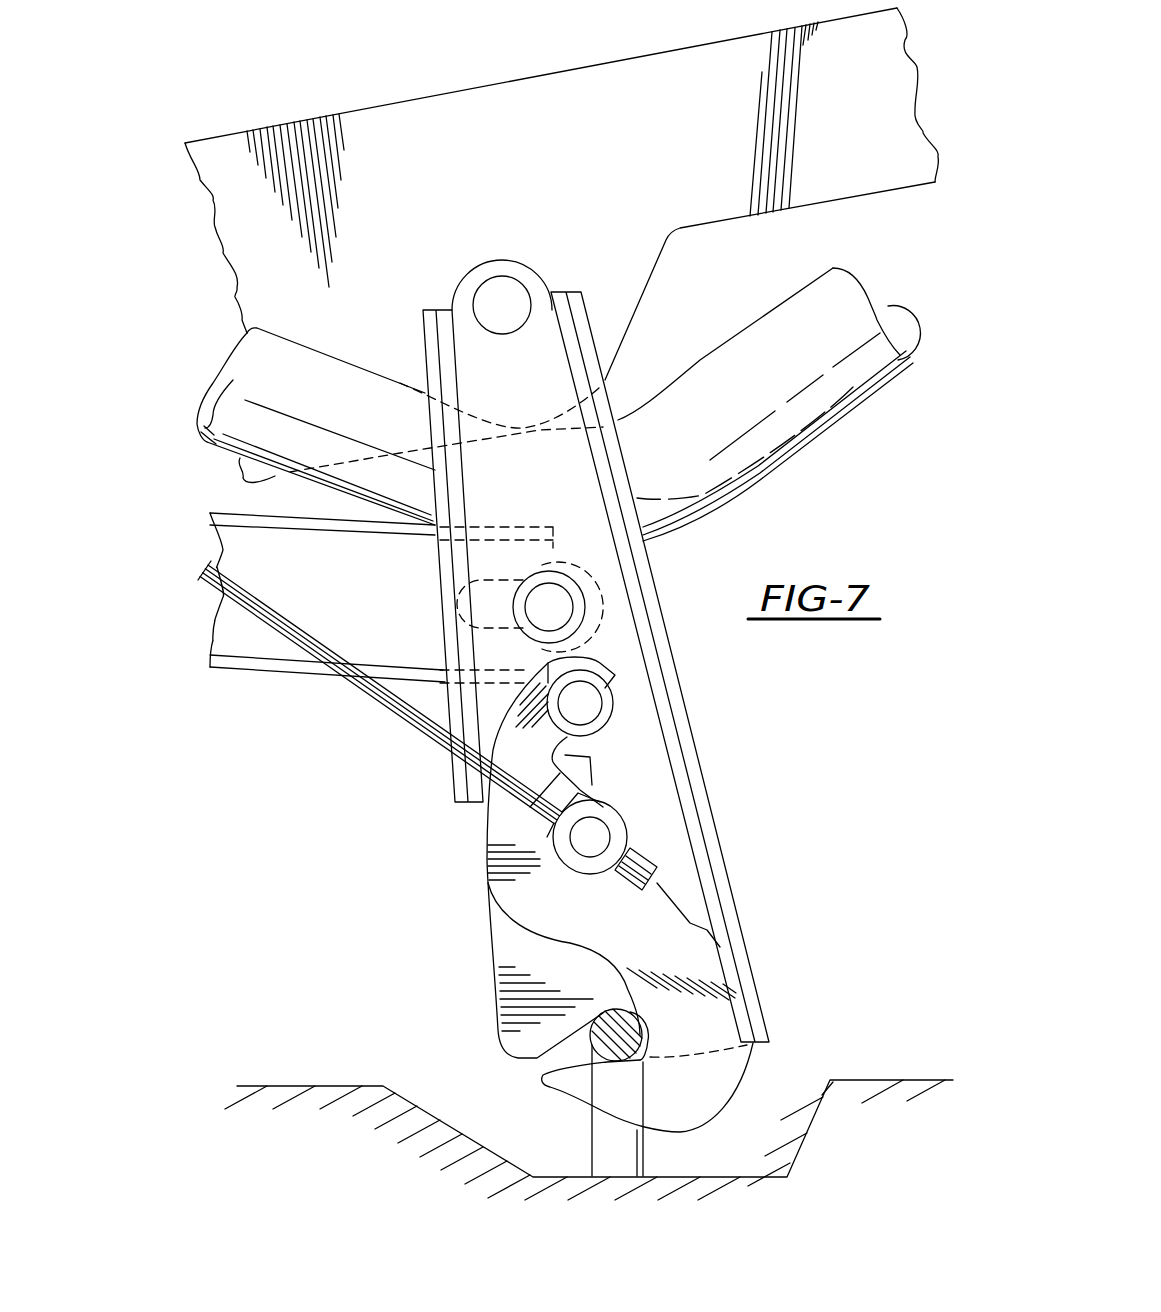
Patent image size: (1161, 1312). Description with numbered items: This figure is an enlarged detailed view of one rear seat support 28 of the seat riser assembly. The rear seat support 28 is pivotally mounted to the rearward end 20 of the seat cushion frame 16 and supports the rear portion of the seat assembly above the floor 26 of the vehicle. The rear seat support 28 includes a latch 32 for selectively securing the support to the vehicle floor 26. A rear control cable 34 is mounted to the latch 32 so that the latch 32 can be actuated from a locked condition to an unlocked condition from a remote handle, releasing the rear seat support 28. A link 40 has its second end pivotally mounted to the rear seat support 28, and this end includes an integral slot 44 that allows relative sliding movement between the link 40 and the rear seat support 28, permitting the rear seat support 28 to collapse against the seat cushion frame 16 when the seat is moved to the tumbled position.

The rearward end 20 is at (517, 125).
The seat cushion frame 16 is at (224, 356).
The link 40 is at (250, 650).
The rear control cable 34 is at (375, 698).
The slot 44 is at (457, 606).
The rear seat support 28 is at (658, 818).
The floor 26 is at (264, 1086).
The latch 32 is at (710, 1092).